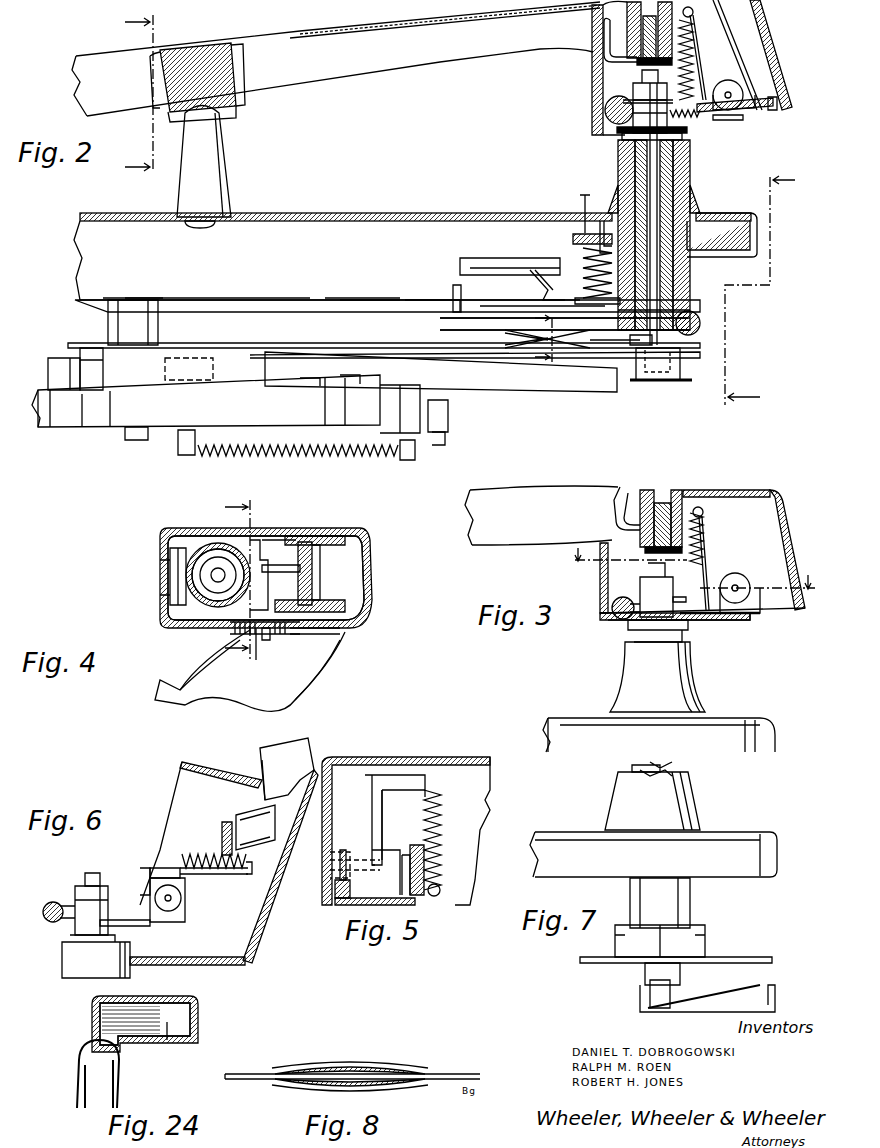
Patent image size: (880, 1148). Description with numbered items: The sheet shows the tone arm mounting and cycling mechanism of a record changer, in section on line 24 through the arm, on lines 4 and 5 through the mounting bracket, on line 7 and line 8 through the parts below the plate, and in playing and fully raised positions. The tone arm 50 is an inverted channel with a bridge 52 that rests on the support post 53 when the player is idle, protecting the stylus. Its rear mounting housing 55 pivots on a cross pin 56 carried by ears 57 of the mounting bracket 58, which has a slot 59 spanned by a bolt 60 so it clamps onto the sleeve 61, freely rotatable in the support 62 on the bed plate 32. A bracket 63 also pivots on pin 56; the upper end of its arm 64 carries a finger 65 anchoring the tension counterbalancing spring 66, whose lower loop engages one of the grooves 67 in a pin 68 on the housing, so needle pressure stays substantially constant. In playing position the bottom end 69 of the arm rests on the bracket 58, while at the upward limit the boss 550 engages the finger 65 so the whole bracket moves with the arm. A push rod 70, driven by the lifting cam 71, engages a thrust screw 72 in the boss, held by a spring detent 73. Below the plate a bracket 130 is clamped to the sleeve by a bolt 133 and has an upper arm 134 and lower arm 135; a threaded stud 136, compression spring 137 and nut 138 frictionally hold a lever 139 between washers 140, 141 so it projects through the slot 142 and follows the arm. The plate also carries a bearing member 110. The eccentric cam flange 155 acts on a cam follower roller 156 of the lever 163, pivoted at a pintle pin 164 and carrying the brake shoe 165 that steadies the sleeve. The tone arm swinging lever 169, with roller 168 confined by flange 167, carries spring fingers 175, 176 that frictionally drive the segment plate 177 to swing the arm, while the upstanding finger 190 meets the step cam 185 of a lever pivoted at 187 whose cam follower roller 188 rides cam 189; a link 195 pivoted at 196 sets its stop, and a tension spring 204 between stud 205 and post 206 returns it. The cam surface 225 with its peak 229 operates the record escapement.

In FIG. 3, the section line 4— 4 is at (689, 564).
In FIG. 4, the section line 5— 5 is at (229, 576).
In FIG. 2, the section line 7— 7 is at (763, 290).
In FIG. 2, the section line 8— 8 is at (537, 338).
In FIG. 2, the section line 24— 24 is at (120, 182).
In FIG. 2, the bed plate 32 is at (556, 213).
In FIG. 3, the bed plate 32 is at (580, 718).
In FIG. 7, the bed plate 32 is at (742, 840).
In FIG. 2, the tone arm 50 is at (368, 30).
In FIG. 3, the tone arm 50 is at (500, 510).
In FIG. 4, the tone arm 50 is at (218, 690).
In FIG. 6, the tone arm 50 is at (282, 765).
In FIG. 24, the tone arm 50 is at (198, 1032).
In FIG. 2, the bridge 52 is at (225, 95).
In FIG. 24, the bridge 52 is at (167, 1040).
In FIG. 2, the support post 53 is at (205, 187).
In FIG. 24, the support post 53 is at (112, 1073).
In FIG. 2, the mounting housing 55 is at (767, 34).
In FIG. 3, the mounting housing 55 is at (777, 495).
In FIG. 4, the mounting housing 55 is at (365, 593).
In FIG. 6, the mounting housing 55 is at (252, 945).
In FIG. 5, the mounting housing 55 is at (450, 760).
In FIG. 2, the cross pin 56 is at (733, 93).
In FIG. 3, the cross pin 56 is at (740, 592).
In FIG. 4, the cross pin 56 is at (300, 566).
In FIG. 6, the cross pin 56 is at (166, 905).
In FIG. 5, the cross pin 56 is at (343, 850).
In FIG. 2, the ears 57 is at (740, 118).
In FIG. 3, the ears 57 is at (755, 615).
In FIG. 4, the ears 57 is at (320, 534).
In FIG. 6, the ears 57 is at (185, 912).
In FIG. 5, the ears 57 is at (343, 896).
In FIG. 2, the mounting bracket 58 is at (620, 133).
In FIG. 3, the mounting bracket 58 is at (688, 630).
In FIG. 4, the mounting bracket 58 is at (262, 535).
In FIG. 6, the mounting bracket 58 is at (128, 920).
In FIG. 5, the mounting bracket 58 is at (375, 905).
In FIG. 4, the slot 59 is at (211, 575).
In FIG. 3, the bolt 60 is at (615, 616).
In FIG. 4, the bolt 60 is at (200, 590).
In FIG. 6, the bolt 60 is at (53, 904).
In FIG. 2, the sleeve 61 is at (670, 185).
In FIG. 3, the sleeve 61 is at (648, 640).
In FIG. 4, the sleeve 61 is at (196, 600).
In FIG. 6, the sleeve 61 is at (108, 900).
In FIG. 7, the sleeve 61 is at (672, 775).
In FIG. 2, the support 62 is at (690, 196).
In FIG. 3, the support 62 is at (645, 672).
In FIG. 6, the support 62 is at (62, 966).
In FIG. 7, the support 62 is at (680, 815).
In FIG. 2, the bracket 63 is at (716, 94).
In FIG. 3, the bracket 63 is at (733, 613).
In FIG. 4, the bracket 63 is at (320, 582).
In FIG. 6, the bracket 63 is at (158, 868).
In FIG. 5, the bracket 63 is at (395, 870).
In FIG. 2, the arm 64 is at (698, 62).
In FIG. 3, the arm 64 is at (712, 565).
In FIG. 4, the arm 64 is at (312, 572).
In FIG. 6, the arm 64 is at (200, 874).
In FIG. 5, the arm 64 is at (378, 826).
In FIG. 2, the finger 65 is at (693, 14).
In FIG. 3, the finger 65 is at (704, 512).
In FIG. 4, the finger 65 is at (270, 637).
In FIG. 6, the finger 65 is at (249, 875).
In FIG. 5, the finger 65 is at (402, 782).
In FIG. 2, the tension counterbalancing spring 66 is at (694, 38).
In FIG. 3, the tension counterbalancing spring 66 is at (706, 530).
In FIG. 4, the tension counterbalancing spring 66 is at (264, 640).
In FIG. 6, the tension counterbalancing spring 66 is at (198, 855).
In FIG. 5, the tension counterbalancing spring 66 is at (440, 825).
In FIG. 2, the grooves 67 is at (697, 120).
In FIG. 4, the grooves 67 is at (256, 648).
In FIG. 2, the pin 68 is at (770, 112).
In FIG. 4, the pin 68 is at (312, 635).
In FIG. 5, the pin 68 is at (440, 893).
In FIG. 3, the bottom end 69 is at (688, 597).
In FIG. 6, the bottom end 69 is at (142, 868).
In FIG. 2, the push rod 70 is at (633, 88).
In FIG. 3, the push rod 70 is at (640, 572).
In FIG. 4, the push rod 70 is at (212, 545).
In FIG. 6, the push rod 70 is at (90, 873).
In FIG. 7, the push rod 70 is at (640, 768).
In FIG. 2, the lifting cam 71 is at (680, 382).
In FIG. 7, the lifting cam 71 is at (712, 1000).
In FIG. 2, the thrust screw 72 is at (637, 50).
In FIG. 3, the thrust screw 72 is at (662, 500).
In FIG. 6, the thrust screw 72 is at (225, 828).
In FIG. 2, the spring detent 73 is at (612, 62).
In FIG. 3, the spring detent 73 is at (620, 487).
In FIG. 2, the bearing member 110 is at (136, 318).
In FIG. 2, the bracket 130 is at (680, 294).
In FIG. 7, the bracket 130 is at (690, 928).
In FIG. 2, the bolt 133 is at (703, 322).
In FIG. 2, the upper arm 134 is at (594, 318).
In FIG. 2, the lower arm 135 is at (632, 345).
In FIG. 2, the threaded stud 136 is at (585, 206).
In FIG. 2, the compression spring 137 is at (583, 265).
In FIG. 2, the nut 138 is at (573, 240).
In FIG. 2, the lever 139 is at (506, 262).
In FIG. 2, the upper washer 140 is at (548, 288).
In FIG. 2, the lower washer 141 is at (542, 302).
In FIG. 2, the slot 142 is at (466, 258).
In FIG. 2, the eccentric cam flange 155 is at (48, 370).
In FIG. 2, the cam follower roller 156 is at (180, 352).
In FIG. 2, the lever 163 is at (245, 352).
In FIG. 7, the lever 163 is at (750, 990).
In FIG. 2, the pintle pin 164 is at (313, 380).
In FIG. 2, the brake shoe 165 is at (662, 372).
In FIG. 7, the brake shoe 165 is at (645, 978).
In FIG. 2, the flange 167 is at (38, 405).
In FIG. 2, the roller 168 is at (97, 377).
In FIG. 2, the tone arm swinging lever 169 is at (86, 343).
In FIG. 2, the spring finger 175 is at (520, 332).
In FIG. 8, the spring finger 175 is at (375, 1066).
In FIG. 2, the spring finger 176 is at (518, 347).
In FIG. 8, the spring finger 176 is at (395, 1086).
In FIG. 2, the segment plate 177 is at (585, 343).
In FIG. 8, the segment plate 177 is at (446, 1074).
In FIG. 2, the step cam 185 is at (428, 300).
In FIG. 2, the pivot 187 is at (444, 412).
In FIG. 2, the cam follower roller 188 is at (434, 440).
In FIG. 2, the cam 189 is at (312, 420).
In FIG. 2, the upstanding finger 190 is at (461, 290).
In FIG. 2, the link 195 is at (380, 300).
In FIG. 2, the pivot 196 is at (205, 312).
In FIG. 2, the tension spring 204 is at (362, 452).
In FIG. 2, the stud 205 is at (406, 460).
In FIG. 2, the post 206 is at (190, 456).
In FIG. 2, the cam surface 225 is at (84, 396).
In FIG. 2, the peak 229 is at (347, 383).
In FIG. 2, the boss 550 is at (620, 4).
In FIG. 3, the boss 550 is at (682, 492).